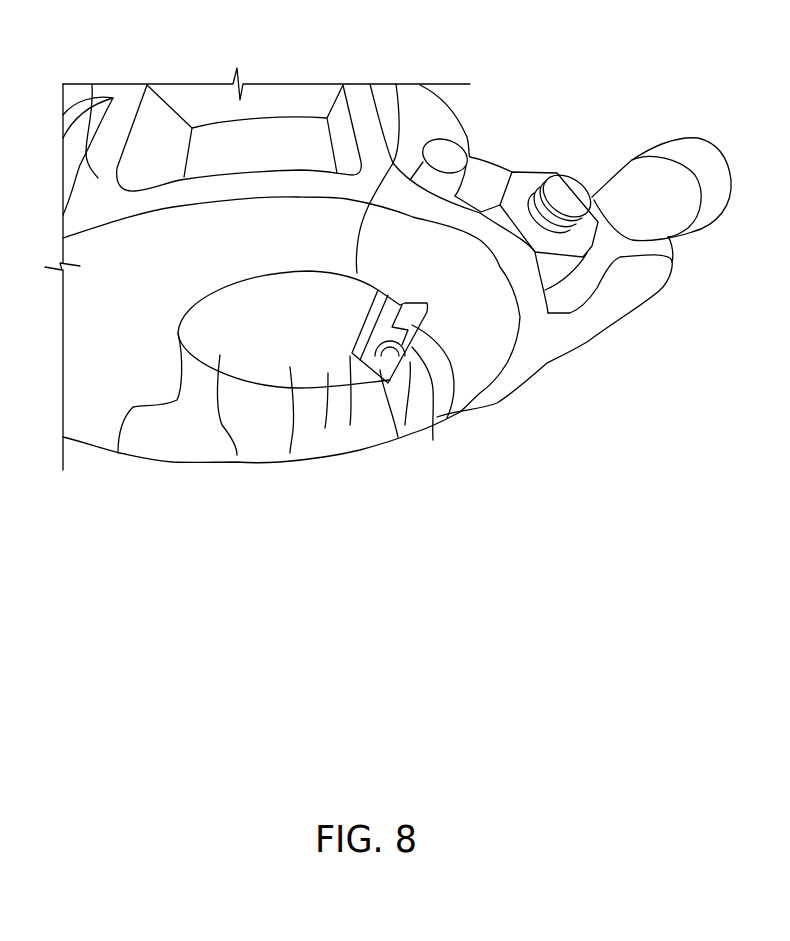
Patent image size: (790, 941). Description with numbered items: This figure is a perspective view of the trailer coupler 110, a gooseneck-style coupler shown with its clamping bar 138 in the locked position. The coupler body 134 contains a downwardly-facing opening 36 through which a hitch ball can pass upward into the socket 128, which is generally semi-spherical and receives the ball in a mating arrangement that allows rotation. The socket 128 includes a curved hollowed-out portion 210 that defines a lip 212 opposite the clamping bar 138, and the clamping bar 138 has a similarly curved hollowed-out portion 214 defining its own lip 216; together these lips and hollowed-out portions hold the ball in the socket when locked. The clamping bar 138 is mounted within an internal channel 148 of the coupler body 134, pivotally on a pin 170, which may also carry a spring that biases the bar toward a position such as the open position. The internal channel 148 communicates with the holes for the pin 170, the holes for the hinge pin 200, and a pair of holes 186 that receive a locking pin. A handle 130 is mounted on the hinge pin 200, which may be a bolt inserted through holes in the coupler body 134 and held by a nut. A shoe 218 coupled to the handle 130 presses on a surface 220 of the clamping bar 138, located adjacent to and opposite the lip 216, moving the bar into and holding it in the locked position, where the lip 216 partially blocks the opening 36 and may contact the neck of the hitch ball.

The trailer coupler 110 is at (312, 90).
The coupler body 134 is at (92, 85).
The hollowed-out portion 214 is at (400, 88).
The pin 170 is at (448, 149).
The hinge pin 200 is at (567, 192).
The handle 130 is at (670, 146).
The shoe 218 is at (453, 400).
The lip 212 is at (118, 453).
The hollowed-out portion 210 is at (237, 455).
The socket 128 is at (290, 453).
The opening 36 is at (325, 428).
The clamping bar 138 is at (350, 425).
The lip 216 is at (358, 400).
The internal channel 148 is at (398, 437).
The holes 186 is at (405, 425).
The surface 220 is at (433, 440).